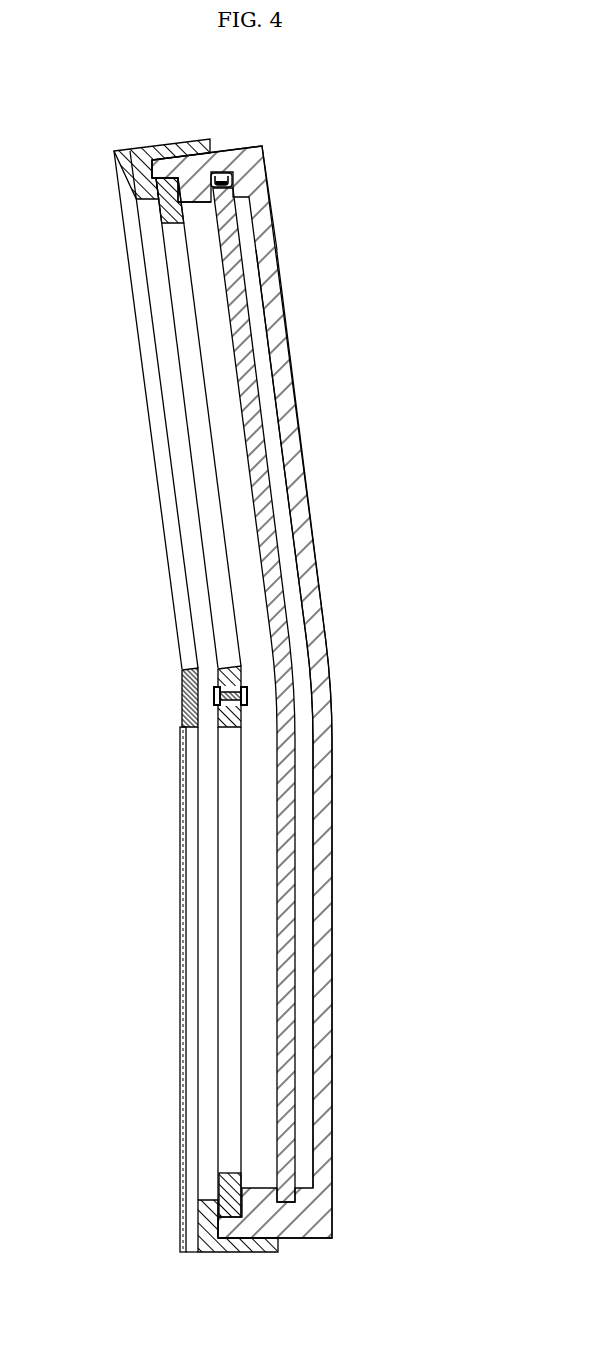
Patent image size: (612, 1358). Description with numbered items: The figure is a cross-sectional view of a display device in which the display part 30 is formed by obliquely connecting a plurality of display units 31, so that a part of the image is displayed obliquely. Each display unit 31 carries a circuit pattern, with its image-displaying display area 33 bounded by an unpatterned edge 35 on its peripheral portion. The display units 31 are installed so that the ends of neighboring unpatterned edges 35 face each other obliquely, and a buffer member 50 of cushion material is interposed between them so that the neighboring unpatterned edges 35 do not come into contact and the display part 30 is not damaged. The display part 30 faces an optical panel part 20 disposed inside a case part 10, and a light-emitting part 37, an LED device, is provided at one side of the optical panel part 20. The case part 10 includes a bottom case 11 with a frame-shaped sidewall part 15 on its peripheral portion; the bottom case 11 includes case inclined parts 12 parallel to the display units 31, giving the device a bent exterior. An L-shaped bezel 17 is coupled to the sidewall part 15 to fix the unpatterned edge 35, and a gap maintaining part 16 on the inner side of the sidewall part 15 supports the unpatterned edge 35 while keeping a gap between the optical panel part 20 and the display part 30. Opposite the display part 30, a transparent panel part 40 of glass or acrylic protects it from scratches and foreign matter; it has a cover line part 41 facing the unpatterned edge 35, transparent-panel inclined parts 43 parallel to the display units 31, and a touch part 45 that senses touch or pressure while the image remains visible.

The case part 10 is at (290, 653).
The bottom case 11 is at (303, 463).
The case inclined part 12 is at (277, 353).
The sidewall part 15 is at (242, 157).
The gap maintaining part 16 is at (197, 203).
The bezel 17 is at (167, 143).
The optical panel part 20 is at (286, 588).
The display part 30 is at (277, 708).
The display unit 31 is at (237, 605).
The display area 33 is at (218, 932).
The unpatterned edge 35 is at (218, 718).
The light-emitting part 37 is at (232, 183).
The transparent panel part 40 is at (161, 661).
The cover line part 41 is at (182, 702).
The transparent-panel inclined part 43 is at (153, 395).
The touch part 45 is at (180, 828).
The buffer member 50 is at (215, 690).